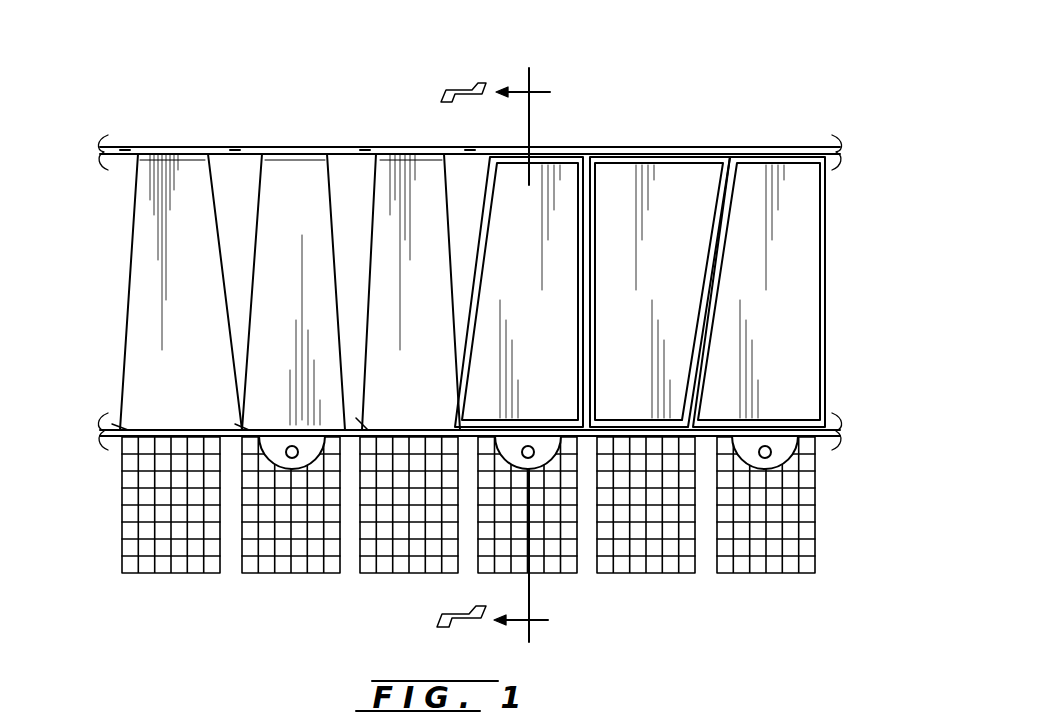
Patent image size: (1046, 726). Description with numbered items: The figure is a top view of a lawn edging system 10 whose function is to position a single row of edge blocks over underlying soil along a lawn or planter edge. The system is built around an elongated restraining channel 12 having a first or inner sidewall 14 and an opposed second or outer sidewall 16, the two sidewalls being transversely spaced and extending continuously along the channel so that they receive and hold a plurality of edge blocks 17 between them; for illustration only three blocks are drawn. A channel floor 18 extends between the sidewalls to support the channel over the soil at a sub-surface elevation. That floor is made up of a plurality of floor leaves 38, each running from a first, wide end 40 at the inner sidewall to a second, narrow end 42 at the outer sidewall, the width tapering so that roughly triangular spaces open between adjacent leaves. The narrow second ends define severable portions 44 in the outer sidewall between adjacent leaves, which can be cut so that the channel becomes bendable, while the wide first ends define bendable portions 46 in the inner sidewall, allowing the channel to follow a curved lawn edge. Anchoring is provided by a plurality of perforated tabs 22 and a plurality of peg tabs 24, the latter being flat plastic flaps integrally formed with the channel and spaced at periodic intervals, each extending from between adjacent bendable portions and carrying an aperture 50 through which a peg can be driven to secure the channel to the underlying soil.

The lawn edging system 10 is at (330, 113).
The elongated restraining channel 12 is at (434, 140).
The inner sidewall 14 is at (160, 430).
The outer sidewall 16 is at (195, 150).
The edge blocks 17 is at (568, 182).
The channel floor 18 is at (124, 285).
The perforated tabs 22 is at (132, 530).
The peg tabs 24 is at (792, 462).
The floor leaves 38 is at (260, 228).
The first wide end 40 is at (140, 347).
The second narrow end 42 is at (278, 166).
The severable portions 44 is at (125, 150).
The bendable portions 46 is at (116, 429).
The aperture 50 is at (772, 458).